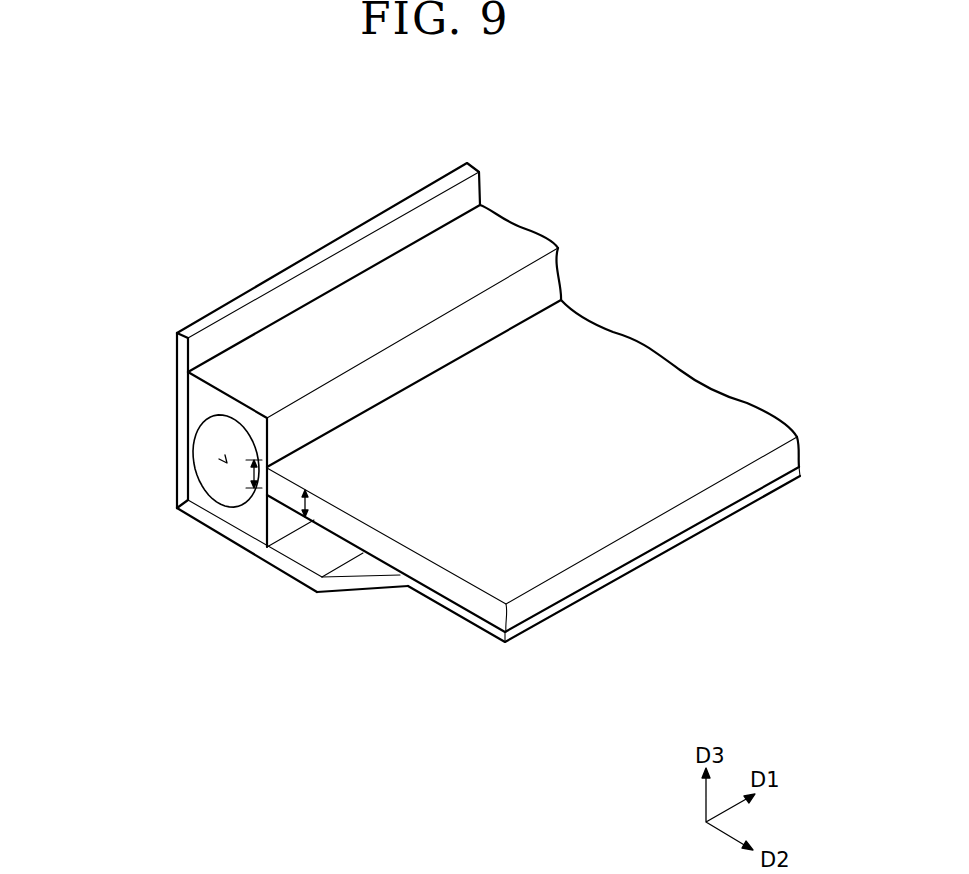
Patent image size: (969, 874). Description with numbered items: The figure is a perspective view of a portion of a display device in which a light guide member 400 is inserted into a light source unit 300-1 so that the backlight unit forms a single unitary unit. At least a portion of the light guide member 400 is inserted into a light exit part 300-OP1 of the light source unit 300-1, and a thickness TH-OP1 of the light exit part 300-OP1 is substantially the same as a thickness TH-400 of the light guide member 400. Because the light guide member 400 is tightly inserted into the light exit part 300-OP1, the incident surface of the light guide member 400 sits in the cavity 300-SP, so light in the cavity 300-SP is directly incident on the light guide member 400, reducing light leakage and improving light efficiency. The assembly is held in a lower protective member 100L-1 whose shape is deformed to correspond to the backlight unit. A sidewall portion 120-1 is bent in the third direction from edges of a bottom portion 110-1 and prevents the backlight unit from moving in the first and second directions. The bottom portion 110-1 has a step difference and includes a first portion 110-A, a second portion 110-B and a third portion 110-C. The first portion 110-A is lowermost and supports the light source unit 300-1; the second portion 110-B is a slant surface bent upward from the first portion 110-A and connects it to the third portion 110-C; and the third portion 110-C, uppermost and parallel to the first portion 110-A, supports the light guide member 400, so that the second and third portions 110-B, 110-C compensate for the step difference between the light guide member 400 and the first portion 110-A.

The lower protective member 100L-1 is at (458, 748).
The sidewall portion 120-1 is at (177, 500).
The bottom portion 110-1 is at (508, 702).
The first portion 110-A is at (298, 580).
The second portion 110-B is at (362, 590).
The third portion 110-C is at (478, 615).
The light source unit 300-1 is at (333, 307).
The light exit part 300-OP1 is at (264, 490).
The cavity 300-SP is at (227, 462).
The thickness of the light exit part TH-OP1 is at (254, 462).
The light guide member 400 is at (790, 453).
The thickness of the light guide member TH-400 is at (303, 503).